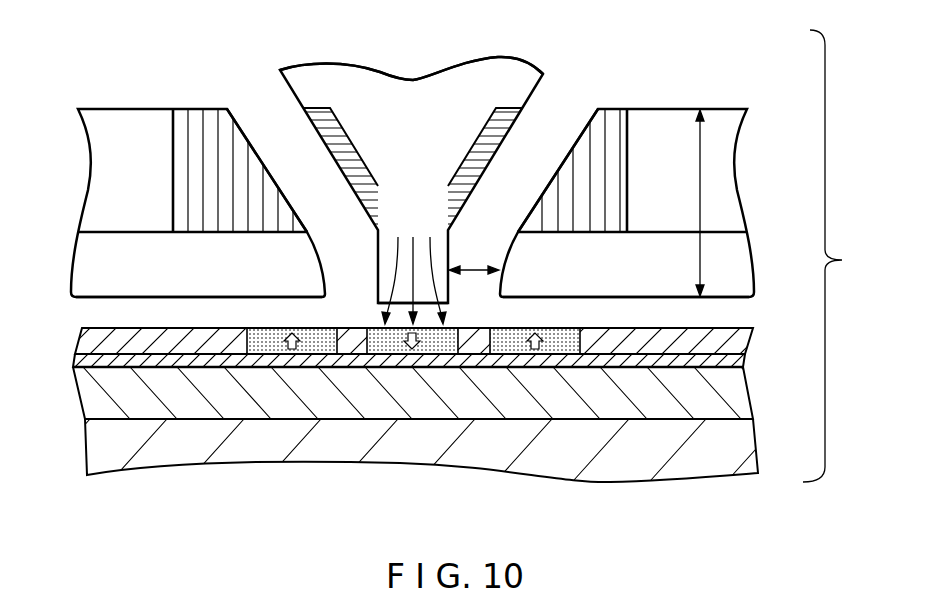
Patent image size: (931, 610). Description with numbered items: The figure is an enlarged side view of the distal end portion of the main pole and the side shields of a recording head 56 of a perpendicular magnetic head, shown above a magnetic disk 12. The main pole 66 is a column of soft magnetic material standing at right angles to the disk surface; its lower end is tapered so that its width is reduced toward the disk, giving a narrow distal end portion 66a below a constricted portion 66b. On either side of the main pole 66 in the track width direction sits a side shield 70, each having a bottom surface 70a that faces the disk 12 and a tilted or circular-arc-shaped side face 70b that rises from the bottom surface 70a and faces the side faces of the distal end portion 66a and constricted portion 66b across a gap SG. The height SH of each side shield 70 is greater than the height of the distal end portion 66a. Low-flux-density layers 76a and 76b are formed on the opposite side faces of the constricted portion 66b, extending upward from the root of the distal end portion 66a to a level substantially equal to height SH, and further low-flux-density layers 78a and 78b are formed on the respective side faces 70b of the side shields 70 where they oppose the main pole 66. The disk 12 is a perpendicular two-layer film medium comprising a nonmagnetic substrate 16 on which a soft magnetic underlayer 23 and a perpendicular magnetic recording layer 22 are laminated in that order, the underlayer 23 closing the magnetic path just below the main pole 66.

The recording head 56 is at (638, 60).
The main pole 66 is at (412, 169).
The distal end portion 66a is at (385, 287).
The constricted portion 66b is at (466, 68).
The low-flux-density layer 76a is at (512, 112).
The low-flux-density layer 76b is at (323, 112).
The side shield 70 is at (412, 181).
The bottom surface 70a is at (115, 296).
The side face 70b is at (248, 121).
The low-flux-density layer 78a is at (624, 158).
The low-flux-density layer 78b is at (177, 153).
The height of side shield SH is at (712, 203).
The gap SG is at (474, 259).
The magnetic disk 12 is at (419, 419).
The substrate 16 is at (743, 446).
The perpendicular magnetic recording layer 22 is at (746, 338).
The soft magnetic underlayer 23 is at (741, 378).